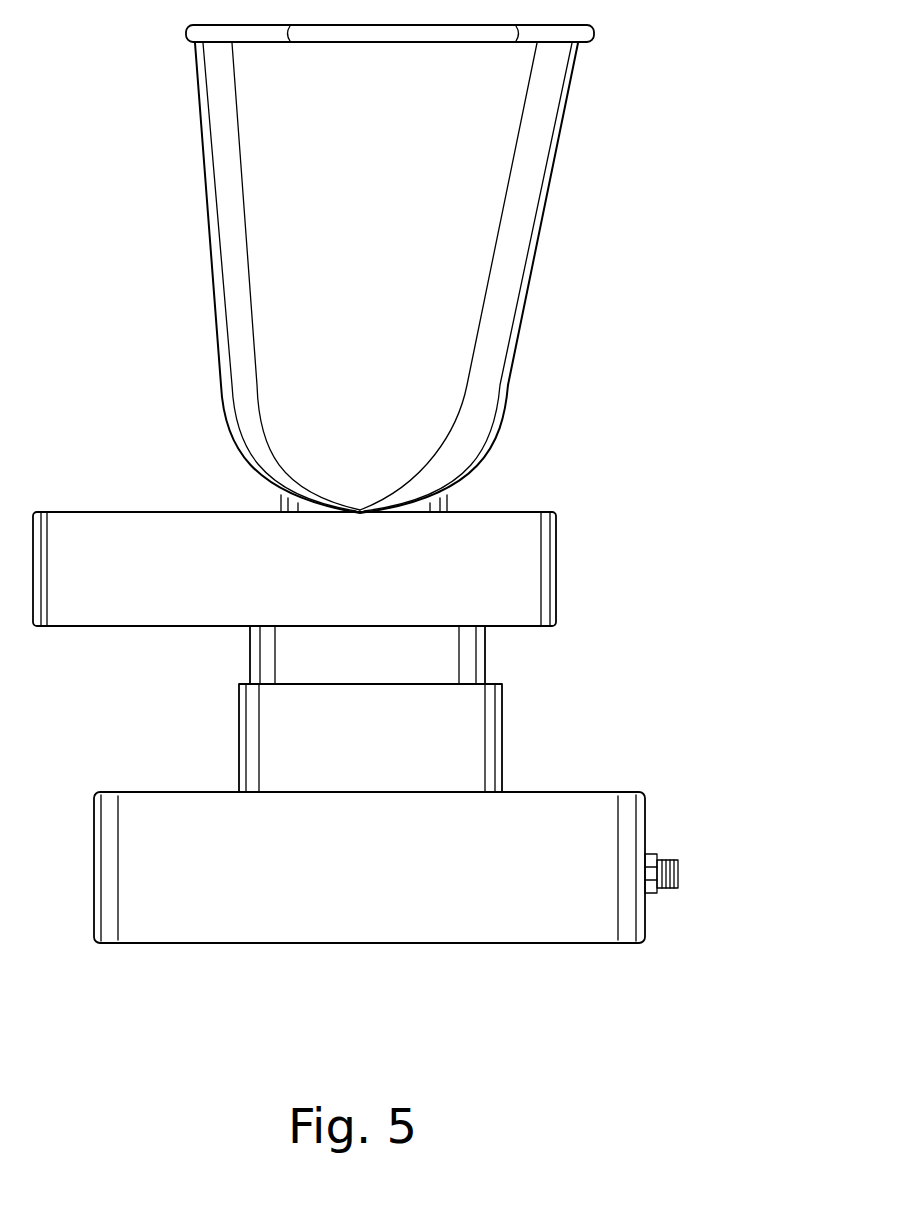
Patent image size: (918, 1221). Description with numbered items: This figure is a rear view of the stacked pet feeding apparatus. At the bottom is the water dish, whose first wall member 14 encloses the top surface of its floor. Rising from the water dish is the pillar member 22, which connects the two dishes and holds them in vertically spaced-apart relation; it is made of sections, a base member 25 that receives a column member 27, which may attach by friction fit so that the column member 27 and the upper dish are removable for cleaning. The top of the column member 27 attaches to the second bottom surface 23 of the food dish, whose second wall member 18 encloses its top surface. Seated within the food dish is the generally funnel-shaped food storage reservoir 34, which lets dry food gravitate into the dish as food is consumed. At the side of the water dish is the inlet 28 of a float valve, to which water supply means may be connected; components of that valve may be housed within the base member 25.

The food storage reservoir 34 is at (339, 237).
The second wall member 18 is at (334, 583).
The second bottom surface 23 is at (81, 623).
The column member 27 is at (339, 671).
The base member 25 is at (353, 768).
The pillar member 22 is at (550, 722).
The first wall member 14 is at (361, 890).
The inlet 28 is at (679, 868).